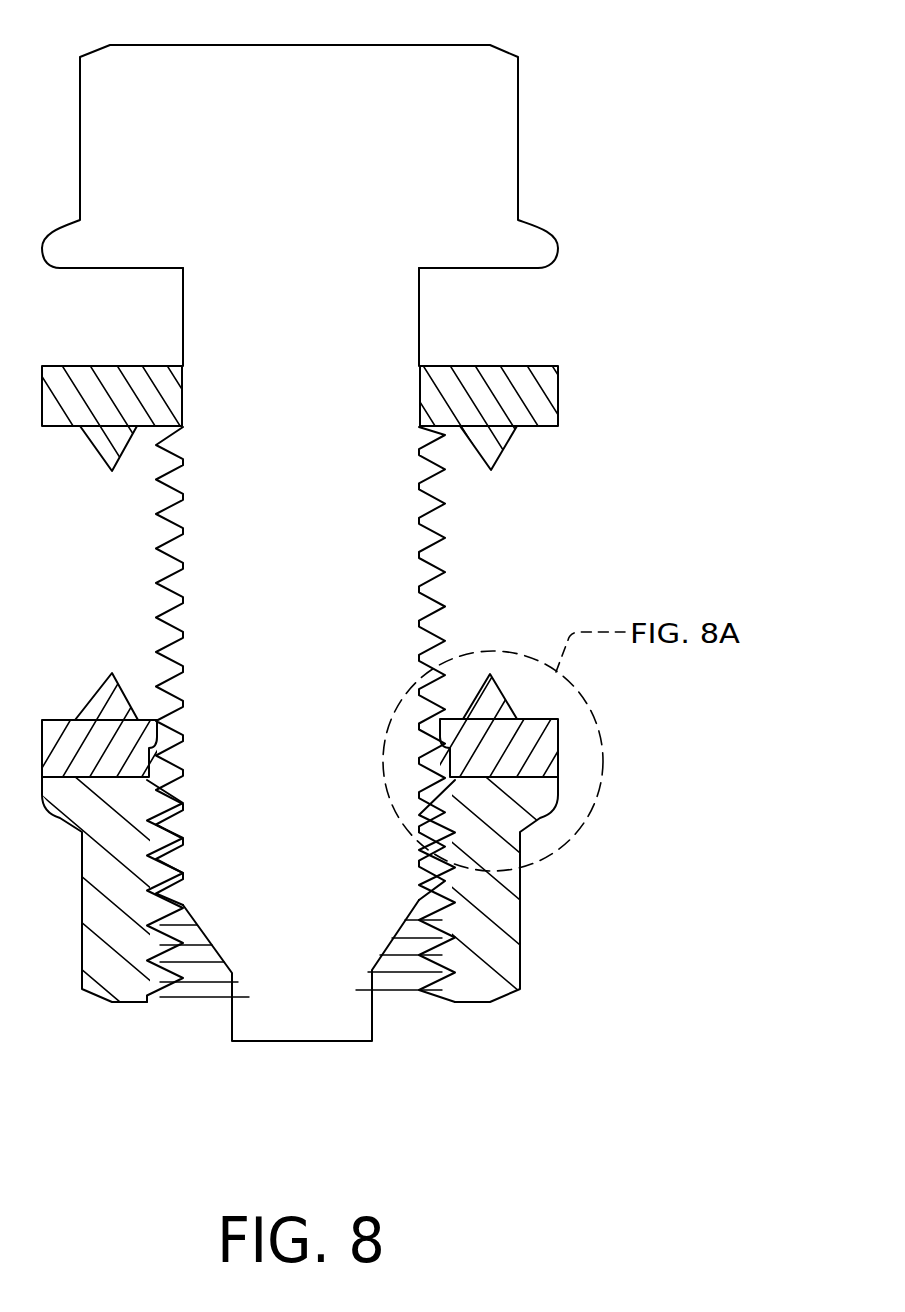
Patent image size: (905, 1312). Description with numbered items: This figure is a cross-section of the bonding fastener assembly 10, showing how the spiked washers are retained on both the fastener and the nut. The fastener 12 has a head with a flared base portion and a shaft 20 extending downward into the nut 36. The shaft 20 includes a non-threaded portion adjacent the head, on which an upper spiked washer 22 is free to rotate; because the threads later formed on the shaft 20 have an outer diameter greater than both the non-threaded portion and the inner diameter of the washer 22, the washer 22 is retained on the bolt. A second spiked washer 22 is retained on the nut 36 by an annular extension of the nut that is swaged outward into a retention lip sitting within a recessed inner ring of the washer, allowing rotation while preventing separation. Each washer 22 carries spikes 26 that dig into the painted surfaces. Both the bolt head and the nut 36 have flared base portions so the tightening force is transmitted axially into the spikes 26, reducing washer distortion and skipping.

The bonding fastener assembly 10 is at (616, 79).
The fastener 12 is at (518, 131).
The shaft 20 is at (337, 1041).
The spiked washer 22 is at (372, 565).
The locking tooth 26 is at (500, 452).
The nut 36 is at (520, 912).